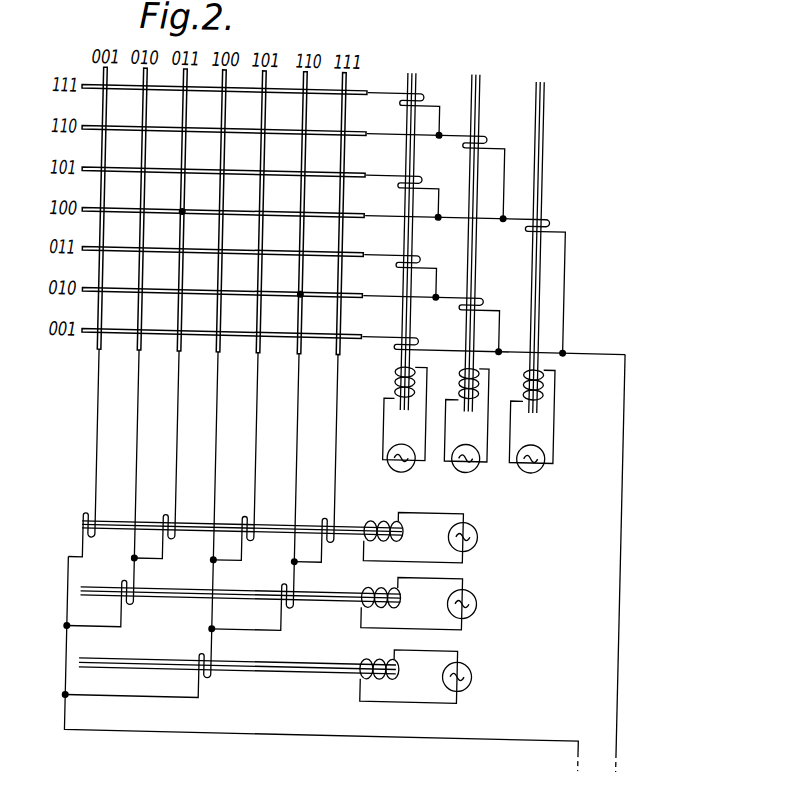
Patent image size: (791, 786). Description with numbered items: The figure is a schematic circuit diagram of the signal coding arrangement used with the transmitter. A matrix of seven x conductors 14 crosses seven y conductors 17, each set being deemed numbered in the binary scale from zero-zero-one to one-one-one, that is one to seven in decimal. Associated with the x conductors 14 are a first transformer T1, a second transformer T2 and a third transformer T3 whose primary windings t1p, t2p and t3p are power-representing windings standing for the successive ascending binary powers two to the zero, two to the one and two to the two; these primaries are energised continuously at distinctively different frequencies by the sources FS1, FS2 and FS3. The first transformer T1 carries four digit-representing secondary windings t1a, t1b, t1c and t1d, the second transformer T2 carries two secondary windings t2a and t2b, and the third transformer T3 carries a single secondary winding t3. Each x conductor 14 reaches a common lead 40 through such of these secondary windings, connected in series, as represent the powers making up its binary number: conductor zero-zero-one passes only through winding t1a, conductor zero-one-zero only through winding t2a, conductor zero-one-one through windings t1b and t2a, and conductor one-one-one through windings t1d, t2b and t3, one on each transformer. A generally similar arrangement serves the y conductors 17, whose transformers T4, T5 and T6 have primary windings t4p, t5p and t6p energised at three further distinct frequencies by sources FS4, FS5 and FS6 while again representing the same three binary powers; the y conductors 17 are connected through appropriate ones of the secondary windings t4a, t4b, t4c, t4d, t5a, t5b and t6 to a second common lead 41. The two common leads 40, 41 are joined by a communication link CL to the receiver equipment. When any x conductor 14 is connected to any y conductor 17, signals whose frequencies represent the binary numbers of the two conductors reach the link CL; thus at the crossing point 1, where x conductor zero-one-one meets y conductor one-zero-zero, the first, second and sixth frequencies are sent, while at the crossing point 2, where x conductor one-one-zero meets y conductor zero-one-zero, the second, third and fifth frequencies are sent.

The crossing point 1 is at (179, 217).
The crossing point of matrix wires 2 is at (299, 296).
The x conductors 14 is at (341, 148).
The y conductors 17 is at (237, 174).
The common lead 40 is at (278, 735).
The common lead 41 is at (624, 562).
The communication link CL is at (601, 758).
The first transformer T1 is at (242, 513).
The second transformer T2 is at (240, 583).
The third transformer T3 is at (238, 656).
The transformer T4 is at (408, 230).
The transformer T5 is at (474, 231).
The transformer T6 is at (540, 233).
The secondary winding t1a is at (77, 452).
The secondary winding t1b is at (155, 456).
The secondary winding t1c is at (234, 458).
The secondary winding t1d is at (314, 460).
The primary winding t1p is at (413, 537).
The secondary winding t2a is at (101, 489).
The secondary winding t2b is at (253, 493).
The primary winding t2p is at (412, 603).
The secondary winding t3 is at (140, 524).
The primary winding t3p is at (408, 676).
The secondary winding t4a is at (494, 338).
The secondary winding t4b is at (407, 272).
The secondary winding t4c is at (413, 192).
The secondary winding t4d is at (417, 107).
The primary winding t4p is at (405, 414).
The secondary winding t5a is at (441, 318).
The secondary winding t5b is at (445, 171).
The primary winding t5p is at (466, 415).
The secondary winding t6 is at (468, 278).
The primary winding t6p is at (532, 417).
The source FS1 is at (483, 537).
The source FS2 is at (482, 605).
The source FS3 is at (480, 678).
The source FS4 is at (399, 473).
The source FS5 is at (461, 473).
The source FS6 is at (530, 474).